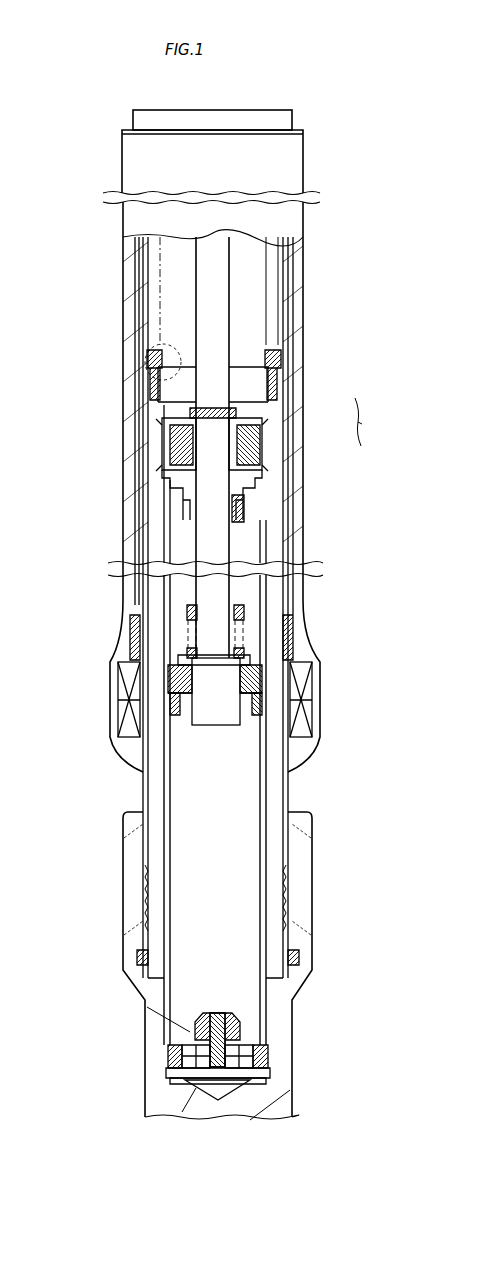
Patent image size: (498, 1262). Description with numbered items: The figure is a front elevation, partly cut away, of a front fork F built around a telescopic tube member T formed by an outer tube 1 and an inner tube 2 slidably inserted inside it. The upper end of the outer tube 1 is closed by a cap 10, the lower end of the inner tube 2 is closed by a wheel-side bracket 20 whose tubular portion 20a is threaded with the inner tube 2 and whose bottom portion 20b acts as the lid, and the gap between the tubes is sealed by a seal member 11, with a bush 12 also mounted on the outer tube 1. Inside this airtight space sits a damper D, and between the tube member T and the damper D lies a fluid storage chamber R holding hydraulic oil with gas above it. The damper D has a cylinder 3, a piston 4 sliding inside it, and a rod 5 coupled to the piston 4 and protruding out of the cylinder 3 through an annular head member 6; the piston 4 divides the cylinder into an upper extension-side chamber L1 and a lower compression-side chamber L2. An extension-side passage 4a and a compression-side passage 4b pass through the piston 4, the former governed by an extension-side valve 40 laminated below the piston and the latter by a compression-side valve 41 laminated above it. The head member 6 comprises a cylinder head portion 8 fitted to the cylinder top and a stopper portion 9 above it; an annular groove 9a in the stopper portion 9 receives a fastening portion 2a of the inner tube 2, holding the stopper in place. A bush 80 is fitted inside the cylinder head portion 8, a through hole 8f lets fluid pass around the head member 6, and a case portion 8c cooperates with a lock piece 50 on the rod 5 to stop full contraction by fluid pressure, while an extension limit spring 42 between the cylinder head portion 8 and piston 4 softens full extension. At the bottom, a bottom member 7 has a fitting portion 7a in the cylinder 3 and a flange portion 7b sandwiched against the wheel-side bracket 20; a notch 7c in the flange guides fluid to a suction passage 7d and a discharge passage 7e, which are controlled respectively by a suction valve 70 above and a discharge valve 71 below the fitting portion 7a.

The front fork F is at (96, 185).
The cap 10 is at (292, 118).
The outer tube 1 is at (122, 500).
The fluid storage chamber R is at (145, 308).
The rod 5 is at (218, 293).
The fastening portion 2a is at (136, 354).
The annular groove 9a is at (290, 385).
The stopper portion 9 is at (288, 406).
The cylinder head portion 8 is at (286, 442).
The head member 6 is at (365, 422).
The through hole 8f is at (162, 427).
The case portion 8c is at (162, 446).
The lock piece 50 is at (270, 484).
The bush 80 is at (257, 513).
The damper D is at (273, 545).
The extension-side chamber L1 is at (185, 552).
The extension limit spring 42 is at (186, 610).
The tube member T is at (305, 597).
The bush 12 is at (129, 638).
The inner tube 2 is at (143, 780).
The piston 4 is at (170, 668).
The compression-side valve 41 is at (250, 662).
The extension-side passage 4a is at (150, 678).
The compression-side passage 4b is at (270, 683).
The seal member 11 is at (318, 698).
The extension-side valve 40 is at (190, 721).
The cylinder 3 is at (268, 793).
The compression-side chamber L2 is at (213, 853).
The wheel-side bracket 20 is at (313, 894).
The tubular portion 20a is at (124, 905).
The bottom portion 20b is at (186, 1104).
The discharge valve 71 is at (243, 1082).
The bottom member 7 is at (252, 1033).
The fitting portion 7a is at (168, 1053).
The discharge passage 7e is at (268, 1044).
The flange portion 7b is at (168, 1068).
The notch 7c is at (270, 1070).
The suction passage 7d is at (170, 1084).
The suction valve 70 is at (186, 1043).